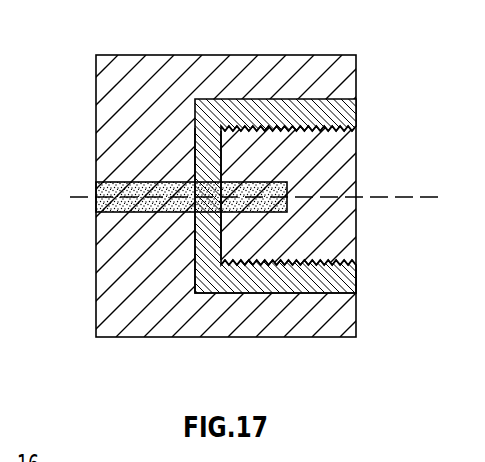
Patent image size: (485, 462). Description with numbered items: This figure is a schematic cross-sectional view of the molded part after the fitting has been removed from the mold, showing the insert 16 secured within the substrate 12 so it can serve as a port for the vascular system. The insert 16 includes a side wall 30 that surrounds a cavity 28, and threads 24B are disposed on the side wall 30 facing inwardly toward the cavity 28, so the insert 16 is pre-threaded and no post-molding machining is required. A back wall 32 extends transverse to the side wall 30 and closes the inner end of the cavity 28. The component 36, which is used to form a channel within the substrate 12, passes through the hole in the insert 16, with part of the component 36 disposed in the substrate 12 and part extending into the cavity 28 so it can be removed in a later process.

The substrate 12 is at (101, 90).
The side wall 30 is at (286, 112).
The threads 24B is at (352, 131).
The back wall 32 is at (208, 166).
The insert 16 is at (313, 287).
The component 36 is at (97, 213).
The cavity 28 is at (322, 223).